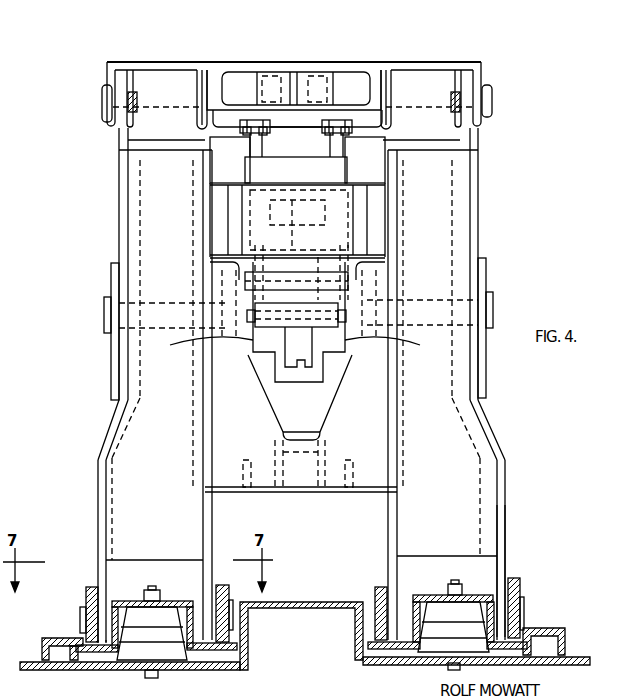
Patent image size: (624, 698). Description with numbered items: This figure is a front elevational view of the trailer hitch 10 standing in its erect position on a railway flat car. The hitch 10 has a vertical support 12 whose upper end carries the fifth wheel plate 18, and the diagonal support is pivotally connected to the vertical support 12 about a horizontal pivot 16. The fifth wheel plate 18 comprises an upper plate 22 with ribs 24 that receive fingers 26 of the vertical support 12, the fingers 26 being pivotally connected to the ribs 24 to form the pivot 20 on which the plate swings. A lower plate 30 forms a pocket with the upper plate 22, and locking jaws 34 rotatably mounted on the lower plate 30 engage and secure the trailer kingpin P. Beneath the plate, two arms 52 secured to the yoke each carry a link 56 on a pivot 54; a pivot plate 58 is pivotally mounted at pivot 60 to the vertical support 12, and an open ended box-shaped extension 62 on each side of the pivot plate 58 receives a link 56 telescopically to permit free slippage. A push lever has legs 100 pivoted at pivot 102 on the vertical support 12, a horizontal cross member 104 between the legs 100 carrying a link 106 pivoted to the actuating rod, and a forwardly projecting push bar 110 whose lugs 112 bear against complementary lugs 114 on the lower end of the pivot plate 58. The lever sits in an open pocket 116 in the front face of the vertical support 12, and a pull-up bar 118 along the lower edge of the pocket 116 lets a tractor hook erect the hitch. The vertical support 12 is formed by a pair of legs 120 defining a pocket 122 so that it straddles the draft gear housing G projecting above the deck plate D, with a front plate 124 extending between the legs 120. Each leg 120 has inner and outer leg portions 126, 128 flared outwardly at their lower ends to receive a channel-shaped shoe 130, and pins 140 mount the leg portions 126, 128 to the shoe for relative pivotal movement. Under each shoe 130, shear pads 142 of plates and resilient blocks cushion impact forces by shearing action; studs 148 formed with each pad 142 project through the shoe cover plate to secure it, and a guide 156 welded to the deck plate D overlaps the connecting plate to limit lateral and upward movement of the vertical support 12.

The hitch 10 is at (119, 220).
The vertical support 12 is at (158, 396).
The horizontal pivot 16 is at (150, 310).
The fifth wheel plate 18 is at (356, 62).
The pivot 20 is at (498, 96).
The upper plate 22 is at (265, 72).
The ribs 24 is at (102, 88).
The fingers 26 is at (193, 136).
The lower plate 30 is at (283, 118).
The locking jaws 34 is at (268, 78).
The arms 52 is at (243, 127).
The pivot 54 is at (308, 128).
The link 56 is at (250, 148).
The pivot plate 58 is at (296, 170).
The pivot 60 is at (297, 220).
The box-shaped extension 62 is at (248, 174).
The legs 100 is at (200, 352).
The pivot 102 is at (247, 462).
The horizontal cross member 104 is at (322, 325).
The link 106 is at (290, 344).
The push bar 110 is at (316, 262).
The lugs 112 is at (324, 290).
The lugs 114 is at (255, 256).
The open pocket 116 is at (272, 410).
The pull-up bar 118 is at (300, 432).
The legs 120 is at (145, 515).
The pocket 122 is at (301, 508).
The front plate 124 is at (443, 445).
The inner leg portion 126 is at (212, 525).
The outer leg portion 128 is at (98, 585).
The shoe 130 is at (185, 600).
The pins 140 is at (86, 612).
The shear pads 142 is at (140, 652).
The studs 148 is at (146, 588).
The guide 156 is at (72, 638).
The deck plate D is at (357, 668).
The draft gear housing G is at (305, 602).
The kingpin P is at (297, 70).